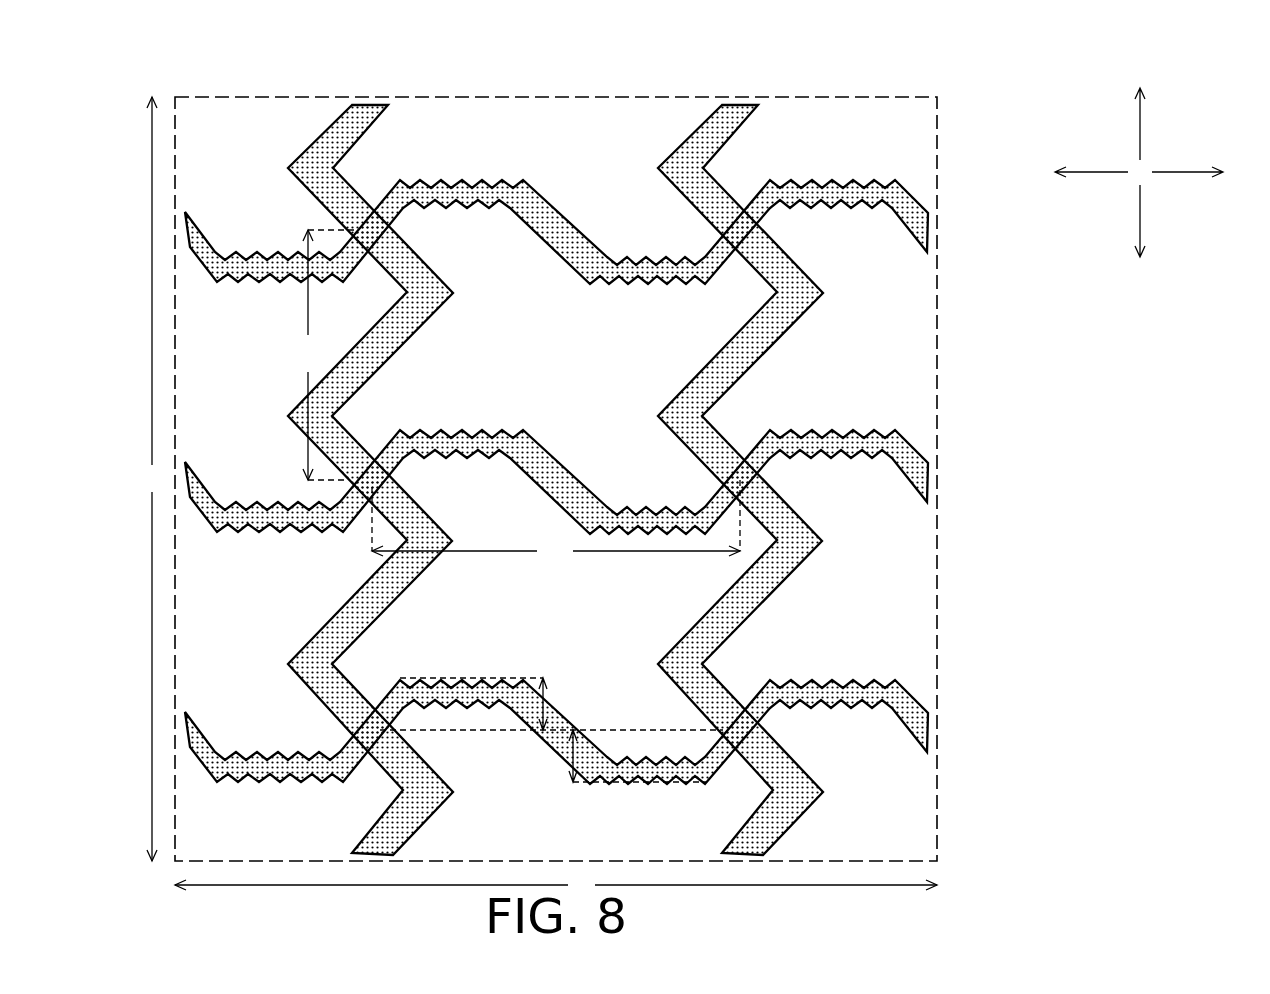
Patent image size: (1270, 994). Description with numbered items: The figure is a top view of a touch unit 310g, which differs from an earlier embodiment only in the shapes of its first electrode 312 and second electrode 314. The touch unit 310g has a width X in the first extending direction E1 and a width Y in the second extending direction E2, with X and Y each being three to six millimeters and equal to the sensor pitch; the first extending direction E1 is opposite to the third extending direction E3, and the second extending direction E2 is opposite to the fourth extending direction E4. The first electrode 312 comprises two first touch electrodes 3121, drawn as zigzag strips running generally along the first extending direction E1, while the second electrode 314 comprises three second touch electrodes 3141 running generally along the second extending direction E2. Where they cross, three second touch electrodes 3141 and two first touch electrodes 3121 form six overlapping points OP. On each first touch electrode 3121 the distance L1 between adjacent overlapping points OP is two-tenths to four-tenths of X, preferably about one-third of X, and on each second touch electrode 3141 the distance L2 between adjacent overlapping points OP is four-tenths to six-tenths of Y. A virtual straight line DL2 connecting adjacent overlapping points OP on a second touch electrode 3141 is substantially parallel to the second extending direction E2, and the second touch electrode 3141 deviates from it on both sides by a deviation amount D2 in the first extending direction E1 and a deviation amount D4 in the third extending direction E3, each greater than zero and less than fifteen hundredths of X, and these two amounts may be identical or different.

The touch unit 310g is at (1122, 878).
The first electrode 312 is at (767, 67).
The first touch electrode 3121 is at (368, 118).
The second electrode 314 is at (1010, 213).
The second touch electrode 3141 is at (923, 227).
The overlapping point OP is at (360, 218).
The distance between adjacent overlapping points on first touch electrode L1 is at (328, 355).
The distance between adjacent overlapping points on second touch electrode L2 is at (556, 524).
The deviation amount D2 is at (551, 703).
The deviation amount D4 is at (622, 759).
The virtual straight line DL2 is at (633, 728).
The width of touch unit in first extending direction X is at (152, 479).
The width of touch unit in second extending direction Y is at (556, 887).
The first extending direction E1 is at (1142, 108).
The second extending direction E2 is at (1204, 174).
The third extending direction E3 is at (1142, 239).
The fourth extending direction E4 is at (1075, 174).